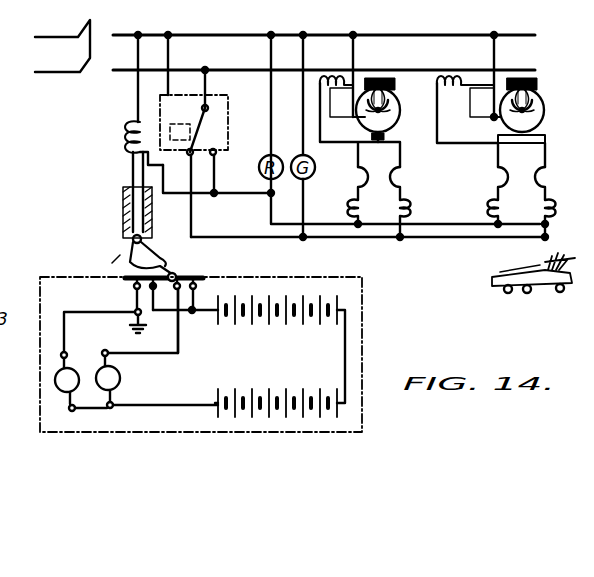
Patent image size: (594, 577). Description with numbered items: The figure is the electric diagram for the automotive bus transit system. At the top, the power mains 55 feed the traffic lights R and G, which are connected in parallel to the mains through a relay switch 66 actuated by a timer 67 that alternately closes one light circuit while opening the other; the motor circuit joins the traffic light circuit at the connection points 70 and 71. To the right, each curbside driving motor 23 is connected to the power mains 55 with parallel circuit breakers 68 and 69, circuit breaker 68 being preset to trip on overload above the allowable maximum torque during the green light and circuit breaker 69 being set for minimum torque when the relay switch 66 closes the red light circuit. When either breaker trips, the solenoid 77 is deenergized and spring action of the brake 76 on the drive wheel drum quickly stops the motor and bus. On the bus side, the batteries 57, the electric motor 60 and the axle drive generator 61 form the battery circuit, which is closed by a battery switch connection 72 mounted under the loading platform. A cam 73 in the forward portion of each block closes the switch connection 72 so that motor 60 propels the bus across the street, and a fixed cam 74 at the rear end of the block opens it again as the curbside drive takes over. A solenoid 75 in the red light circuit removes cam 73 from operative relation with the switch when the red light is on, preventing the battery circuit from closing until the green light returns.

The power mains 55 is at (188, 35).
The timer 67 is at (226, 100).
The relay switch 66 is at (189, 127).
The connection to traffic light circuit 70 is at (186, 157).
The connection to traffic light circuit 71 is at (216, 157).
The solenoid 75 is at (126, 150).
The cam 73 is at (148, 254).
The battery switch connection 72 is at (195, 275).
The fixed cam 74 is at (553, 262).
The driving motor 23 is at (388, 120).
The brake 76 is at (364, 121).
The solenoid 77 is at (410, 98).
The circuit breaker 69 is at (494, 178).
The circuit breaker 68 is at (481, 203).
The electric motor 60 is at (57, 385).
The axle drive generator 61 is at (120, 375).
The electric batteries 57 is at (248, 390).